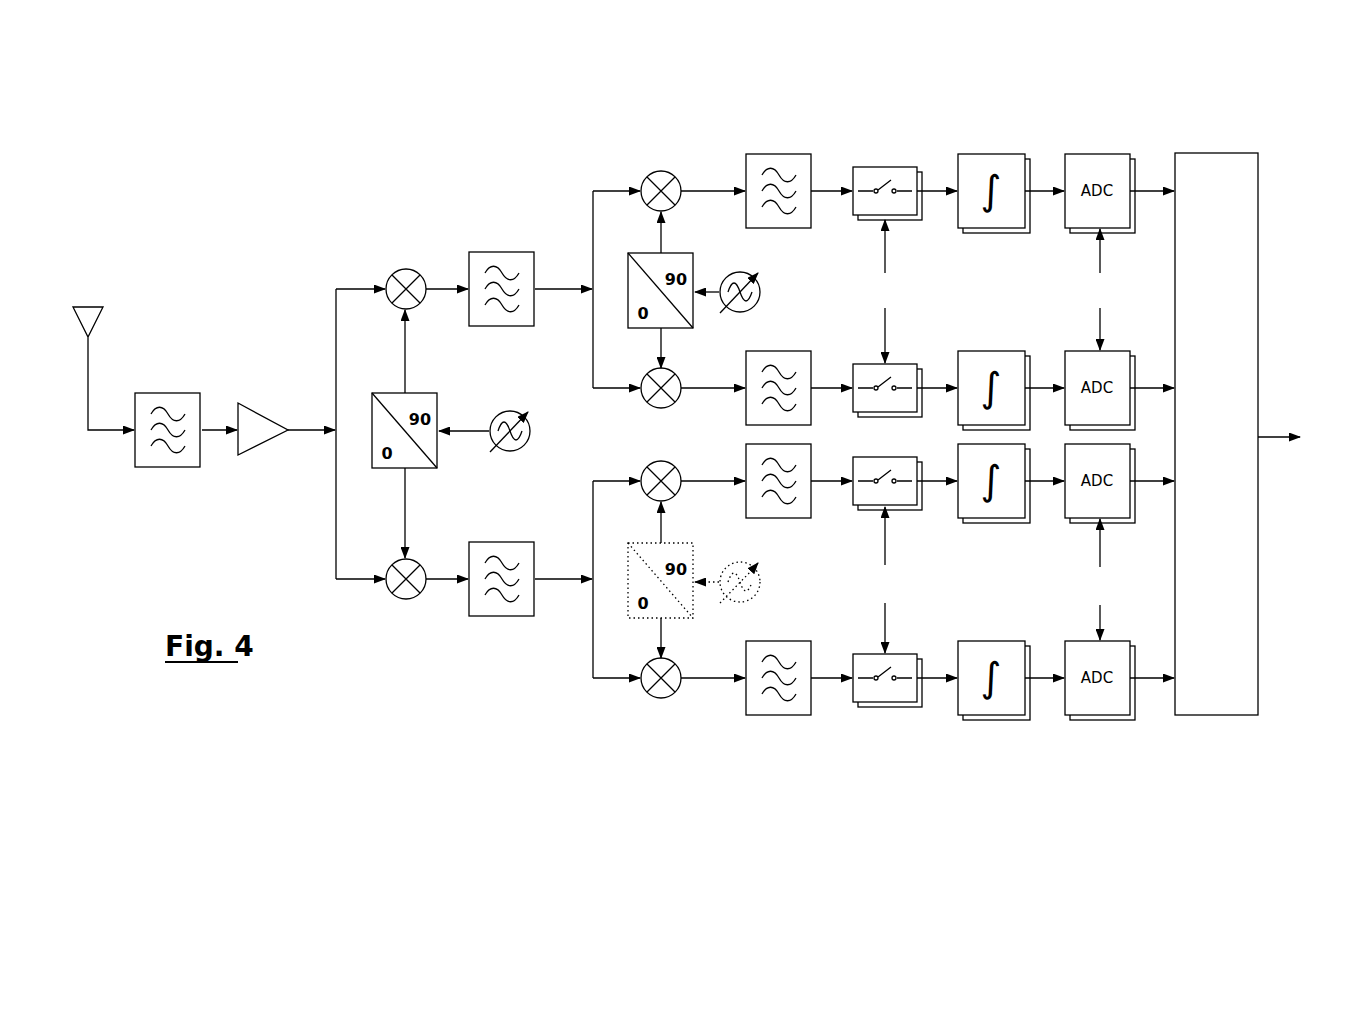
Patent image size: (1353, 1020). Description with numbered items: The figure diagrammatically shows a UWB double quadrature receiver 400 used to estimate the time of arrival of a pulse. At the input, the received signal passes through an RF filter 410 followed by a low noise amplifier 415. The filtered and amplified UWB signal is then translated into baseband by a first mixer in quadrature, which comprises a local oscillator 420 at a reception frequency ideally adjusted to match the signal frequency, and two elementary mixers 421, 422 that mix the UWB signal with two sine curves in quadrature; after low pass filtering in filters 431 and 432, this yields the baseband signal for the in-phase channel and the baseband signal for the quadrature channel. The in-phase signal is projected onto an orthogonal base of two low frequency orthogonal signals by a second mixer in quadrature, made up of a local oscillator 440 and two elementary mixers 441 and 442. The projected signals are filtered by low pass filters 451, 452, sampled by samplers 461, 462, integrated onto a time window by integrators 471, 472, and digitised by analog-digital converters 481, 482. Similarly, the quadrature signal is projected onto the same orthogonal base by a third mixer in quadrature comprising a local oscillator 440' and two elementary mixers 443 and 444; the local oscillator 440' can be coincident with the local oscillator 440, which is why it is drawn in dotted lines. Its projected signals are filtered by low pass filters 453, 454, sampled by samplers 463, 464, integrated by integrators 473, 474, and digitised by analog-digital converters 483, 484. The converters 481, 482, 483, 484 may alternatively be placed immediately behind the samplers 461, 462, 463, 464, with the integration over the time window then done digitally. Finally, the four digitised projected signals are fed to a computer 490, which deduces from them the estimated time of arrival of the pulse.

The receiver 400 is at (152, 176).
The RF filter 410 is at (158, 392).
The low noise amplifier 415 is at (250, 403).
The local oscillator 420 is at (500, 410).
The elementary mixer 421 is at (407, 268).
The elementary mixer 422 is at (396, 600).
The low pass filter 431 is at (506, 251).
The low pass filter 432 is at (505, 618).
The local oscillator 440 is at (727, 290).
The local oscillator 440' is at (731, 580).
The elementary mixer 441 is at (655, 170).
The elementary mixer 442 is at (652, 405).
The elementary mixer 443 is at (650, 463).
The elementary mixer 444 is at (655, 699).
The low pass filter 451 is at (780, 154).
The low pass filter 452 is at (746, 420).
The low pass filter 453 is at (746, 446).
The low pass filter 454 is at (783, 715).
The sampler 461 is at (881, 166).
The sampler 462 is at (914, 364).
The sampler 463 is at (915, 508).
The sampler 464 is at (890, 708).
The integrator 471 is at (990, 153).
The integrator 472 is at (993, 351).
The integrator 473 is at (1005, 520).
The integrator 474 is at (1003, 716).
The analog-digital converter 481 is at (1092, 153).
The analog-digital converter 482 is at (1120, 352).
The analog-digital converter 483 is at (1122, 520).
The analog-digital converter 484 is at (1093, 716).
The computer 490 is at (1206, 153).